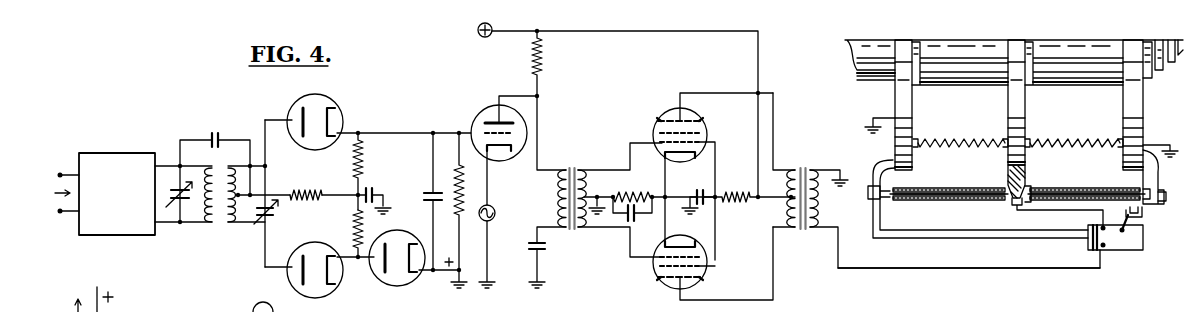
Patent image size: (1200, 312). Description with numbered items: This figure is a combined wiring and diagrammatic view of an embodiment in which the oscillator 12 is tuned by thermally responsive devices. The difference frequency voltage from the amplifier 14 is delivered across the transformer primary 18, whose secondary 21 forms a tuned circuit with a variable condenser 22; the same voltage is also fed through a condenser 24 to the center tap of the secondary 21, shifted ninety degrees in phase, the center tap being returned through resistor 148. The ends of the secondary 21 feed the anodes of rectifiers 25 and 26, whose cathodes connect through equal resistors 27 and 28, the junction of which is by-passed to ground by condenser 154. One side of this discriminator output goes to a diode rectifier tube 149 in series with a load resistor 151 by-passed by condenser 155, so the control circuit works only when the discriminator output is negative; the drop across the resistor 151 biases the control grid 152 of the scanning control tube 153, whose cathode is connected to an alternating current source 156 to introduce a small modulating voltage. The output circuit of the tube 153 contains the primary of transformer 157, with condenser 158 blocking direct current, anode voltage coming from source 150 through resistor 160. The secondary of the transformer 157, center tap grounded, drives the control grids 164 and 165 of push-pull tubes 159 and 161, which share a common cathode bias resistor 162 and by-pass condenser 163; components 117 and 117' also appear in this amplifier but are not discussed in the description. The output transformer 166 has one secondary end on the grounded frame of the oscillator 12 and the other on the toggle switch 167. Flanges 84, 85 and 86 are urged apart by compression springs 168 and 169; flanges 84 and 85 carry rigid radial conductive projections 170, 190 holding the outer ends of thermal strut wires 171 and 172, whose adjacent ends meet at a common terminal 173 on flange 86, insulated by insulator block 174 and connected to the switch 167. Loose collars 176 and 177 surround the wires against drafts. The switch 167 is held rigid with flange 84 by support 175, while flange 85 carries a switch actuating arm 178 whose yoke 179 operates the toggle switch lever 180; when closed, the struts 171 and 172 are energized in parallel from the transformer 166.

The amplifier 14 is at (118, 153).
The transformer primary 18 is at (208, 224).
The transformer secondary 21 is at (226, 224).
The variable condenser 22 is at (272, 212).
The condenser 24 is at (216, 135).
The rectifier 25 is at (308, 150).
The rectifier 26 is at (300, 243).
The resistor 27 is at (365, 160).
The resistor 28 is at (364, 232).
The resistor 148 is at (312, 192).
The diode rectifier tube 149 is at (396, 287).
The source 150 is at (478, 30).
The load resistor 151 is at (456, 170).
The control grid 152 is at (516, 134).
The scanning control tube 153 is at (492, 108).
The condenser 154 is at (375, 189).
The condenser 155 is at (433, 201).
The alternating current source 156 is at (490, 222).
The transformer 157 is at (567, 168).
The condenser 158 is at (548, 250).
The tube 159 is at (700, 122).
The resistor 160 is at (548, 58).
The tube 161 is at (700, 272).
The common cathode bias resistor 162 is at (633, 192).
The by-pass condenser 163 is at (631, 221).
The control grid 164 is at (700, 133).
The control grid 165 is at (700, 252).
The resistor 117 is at (755, 185).
The capacitor 117' is at (715, 183).
The output transformer 166 is at (803, 168).
The flange 84 is at (900, 90).
The flange 85 is at (1137, 108).
The flange 86 is at (1020, 105).
The oscillator 12 is at (1182, 130).
The compression spring 168 is at (958, 140).
The compression spring 169 is at (1073, 140).
The rigid radial conductive projection 170 is at (887, 164).
The thermal strut wire 171 is at (958, 197).
The thermal strut wire 172 is at (1035, 200).
The common terminal 173 is at (1014, 202).
The insulator block 174 is at (1028, 190).
The support 175 is at (1021, 240).
The loose collar 176 is at (943, 187).
The loose collar 177 is at (1068, 188).
The switch actuating arm 178 is at (1162, 198).
The yoke 179 is at (1143, 215).
The toggle switch lever 180 is at (1138, 226).
The rigid radial conductive projection 190 is at (1160, 170).
The toggle switch 167 is at (1124, 250).